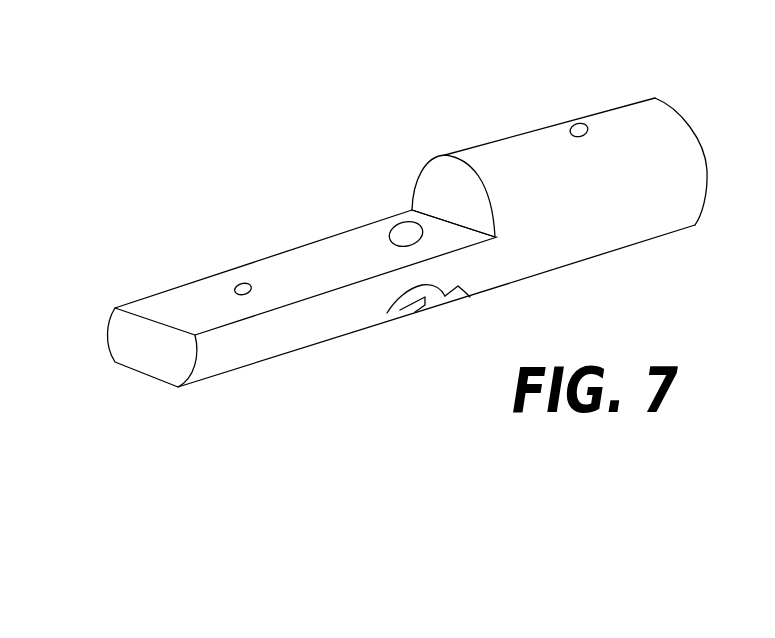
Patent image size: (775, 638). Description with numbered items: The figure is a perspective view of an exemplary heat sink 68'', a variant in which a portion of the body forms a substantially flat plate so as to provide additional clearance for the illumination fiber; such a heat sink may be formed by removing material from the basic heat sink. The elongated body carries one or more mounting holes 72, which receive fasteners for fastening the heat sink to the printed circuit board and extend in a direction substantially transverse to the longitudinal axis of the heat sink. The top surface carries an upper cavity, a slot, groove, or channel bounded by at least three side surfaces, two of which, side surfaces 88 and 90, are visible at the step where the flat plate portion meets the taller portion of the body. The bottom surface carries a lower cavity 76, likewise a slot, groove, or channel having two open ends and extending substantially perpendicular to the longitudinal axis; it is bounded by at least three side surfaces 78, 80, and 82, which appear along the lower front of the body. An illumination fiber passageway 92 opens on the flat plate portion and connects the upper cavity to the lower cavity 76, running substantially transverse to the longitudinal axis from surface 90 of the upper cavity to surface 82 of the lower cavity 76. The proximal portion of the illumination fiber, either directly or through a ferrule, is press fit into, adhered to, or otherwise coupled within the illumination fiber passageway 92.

The heat sink 68'' is at (407, 225).
The mounting holes 72 is at (240, 283).
The side surface of upper cavity 88 is at (442, 180).
The side surface of upper cavity 90 is at (460, 240).
The illumination fiber passageway 92 is at (410, 222).
The side surface of lower cavity 78 is at (412, 304).
The side surface of lower cavity 82 is at (393, 316).
The side surface of lower cavity 80 is at (457, 285).
The lower cavity 76 is at (445, 317).